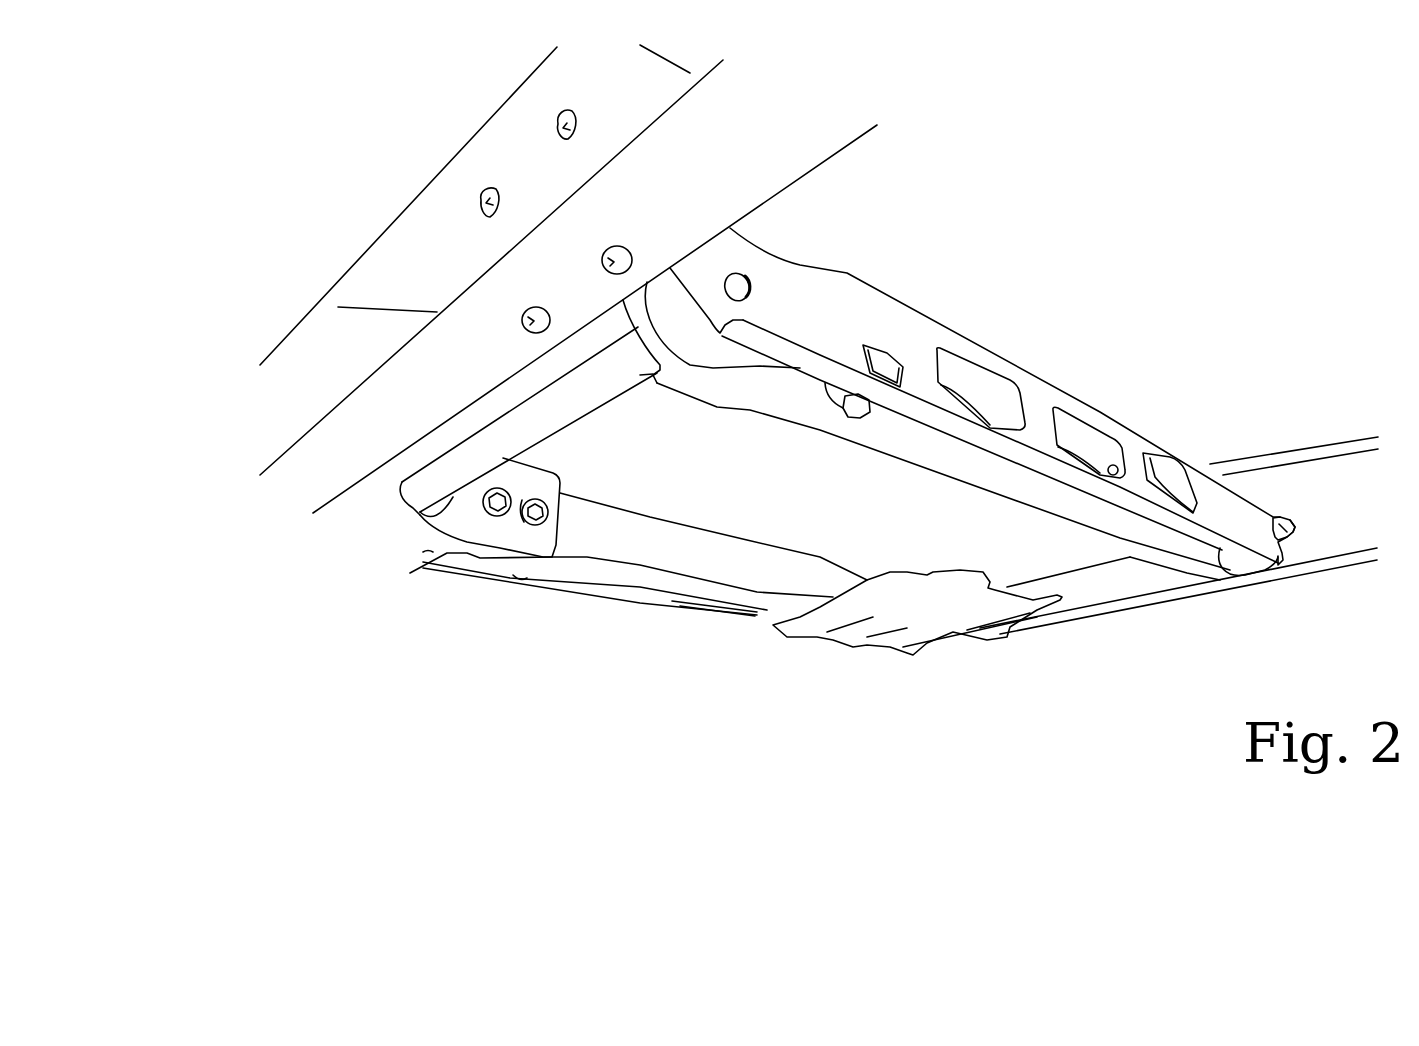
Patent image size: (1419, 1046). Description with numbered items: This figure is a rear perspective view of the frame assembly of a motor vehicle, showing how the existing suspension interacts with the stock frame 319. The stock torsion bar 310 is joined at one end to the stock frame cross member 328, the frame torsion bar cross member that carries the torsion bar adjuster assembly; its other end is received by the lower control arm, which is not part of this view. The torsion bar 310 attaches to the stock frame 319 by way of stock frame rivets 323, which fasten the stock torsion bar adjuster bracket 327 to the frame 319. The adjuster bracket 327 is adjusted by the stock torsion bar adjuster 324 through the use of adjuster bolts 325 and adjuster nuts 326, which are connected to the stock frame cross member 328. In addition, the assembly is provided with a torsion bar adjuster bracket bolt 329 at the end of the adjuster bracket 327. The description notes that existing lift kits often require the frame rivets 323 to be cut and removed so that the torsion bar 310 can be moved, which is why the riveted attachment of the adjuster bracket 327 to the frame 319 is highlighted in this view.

The stock torsion bar 310 is at (548, 410).
The stock frame 319 is at (423, 390).
The stock frame rivets 323 is at (610, 258).
The stock torsion bar adjuster 324 is at (707, 357).
The adjuster bolts 325 is at (858, 410).
The adjuster nuts 326 is at (884, 363).
The stock torsion bar adjuster bracket 327 is at (872, 288).
The stock frame cross member 328 is at (608, 588).
The torsion bar adjuster bracket bolt 329 is at (1291, 523).